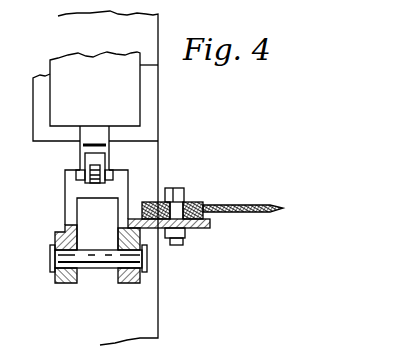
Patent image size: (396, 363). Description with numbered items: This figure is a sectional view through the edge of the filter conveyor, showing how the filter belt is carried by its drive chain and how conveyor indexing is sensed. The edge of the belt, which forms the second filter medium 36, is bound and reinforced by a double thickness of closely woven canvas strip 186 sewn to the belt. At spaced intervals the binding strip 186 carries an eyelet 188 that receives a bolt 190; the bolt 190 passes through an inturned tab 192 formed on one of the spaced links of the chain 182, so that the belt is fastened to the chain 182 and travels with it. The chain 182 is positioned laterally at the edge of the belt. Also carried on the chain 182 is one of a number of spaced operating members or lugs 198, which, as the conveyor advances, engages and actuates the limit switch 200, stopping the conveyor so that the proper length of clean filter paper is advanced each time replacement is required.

The limit switch 200 is at (142, 105).
The operating member or lug 198 is at (128, 170).
The chain 182 is at (58, 285).
The inturned tab 192 is at (205, 229).
The eyelet 188 is at (189, 200).
The canvas strip 186 is at (203, 205).
The bolt 190 is at (178, 246).
The second filter medium 36 is at (268, 213).